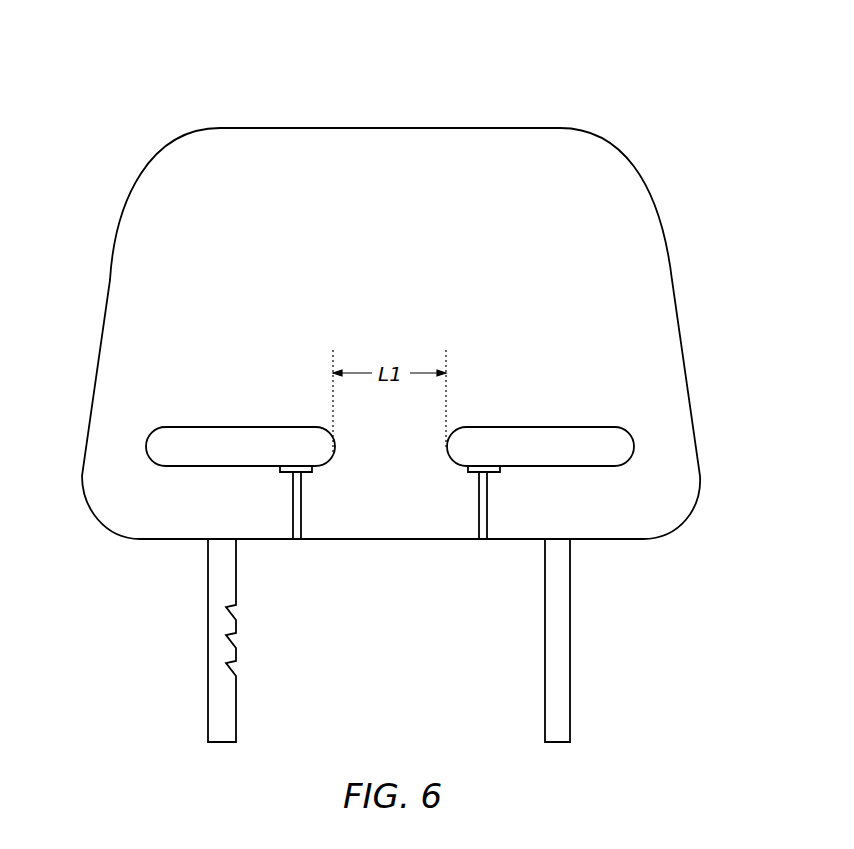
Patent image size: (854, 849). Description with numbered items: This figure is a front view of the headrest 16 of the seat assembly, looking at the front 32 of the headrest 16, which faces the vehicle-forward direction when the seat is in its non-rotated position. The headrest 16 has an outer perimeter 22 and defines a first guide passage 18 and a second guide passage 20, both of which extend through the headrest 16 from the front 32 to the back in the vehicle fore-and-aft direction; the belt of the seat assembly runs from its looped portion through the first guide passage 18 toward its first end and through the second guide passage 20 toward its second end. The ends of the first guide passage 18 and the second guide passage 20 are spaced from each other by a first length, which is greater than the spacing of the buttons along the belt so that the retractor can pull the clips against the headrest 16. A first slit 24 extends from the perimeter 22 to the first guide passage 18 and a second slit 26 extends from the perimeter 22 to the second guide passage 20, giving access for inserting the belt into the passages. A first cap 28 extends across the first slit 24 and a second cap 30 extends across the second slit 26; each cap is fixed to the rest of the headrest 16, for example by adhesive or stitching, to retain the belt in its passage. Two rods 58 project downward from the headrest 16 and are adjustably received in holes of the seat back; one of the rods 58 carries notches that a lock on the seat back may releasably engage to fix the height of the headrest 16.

The headrest 16 is at (510, 128).
The perimeter 22 is at (672, 278).
The front 32 is at (140, 248).
The first guide passage 18 is at (210, 427).
The second guide passage 20 is at (568, 427).
The first slit 24 is at (292, 518).
The second slit 26 is at (488, 517).
The first cap 28 is at (312, 471).
The second cap 30 is at (468, 471).
The rods 58 is at (208, 638).